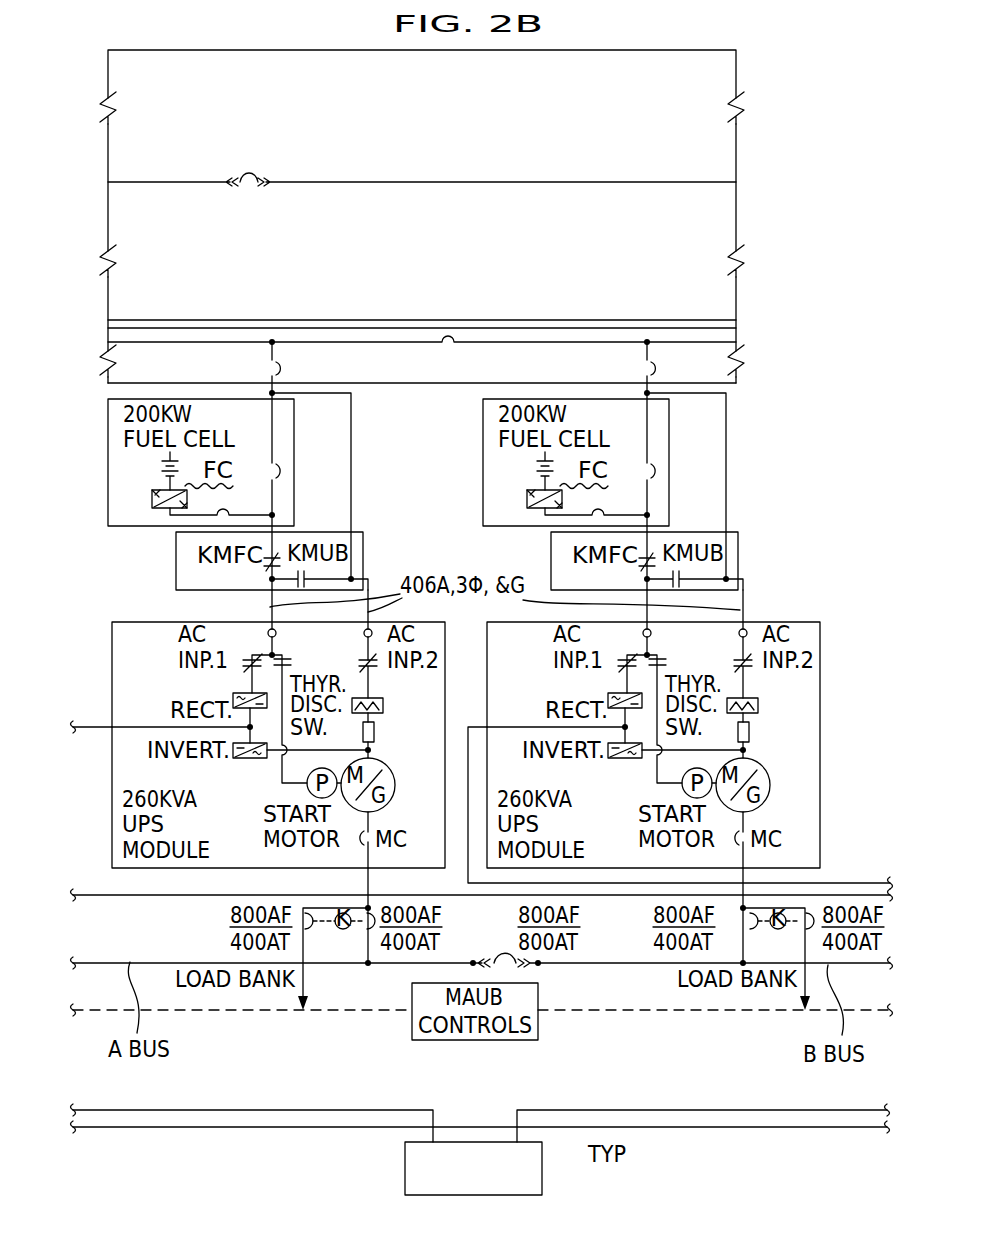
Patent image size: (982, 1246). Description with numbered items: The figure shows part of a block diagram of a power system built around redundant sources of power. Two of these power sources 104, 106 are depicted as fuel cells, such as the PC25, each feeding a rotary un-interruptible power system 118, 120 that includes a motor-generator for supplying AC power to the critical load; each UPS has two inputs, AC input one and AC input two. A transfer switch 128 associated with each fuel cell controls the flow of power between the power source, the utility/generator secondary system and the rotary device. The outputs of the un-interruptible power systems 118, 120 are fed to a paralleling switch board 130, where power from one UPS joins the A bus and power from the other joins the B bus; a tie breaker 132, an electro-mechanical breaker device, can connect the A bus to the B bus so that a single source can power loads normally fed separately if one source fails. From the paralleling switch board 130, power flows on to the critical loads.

The power source 104 is at (294, 452).
The power source 106 is at (669, 455).
The transfer switch 128 is at (176, 573).
The un-interruptible power system 118 is at (112, 640).
The un-interruptible power system 120 is at (820, 640).
The paralleling switch board 130 is at (300, 1128).
The tie breaker 132 is at (508, 968).